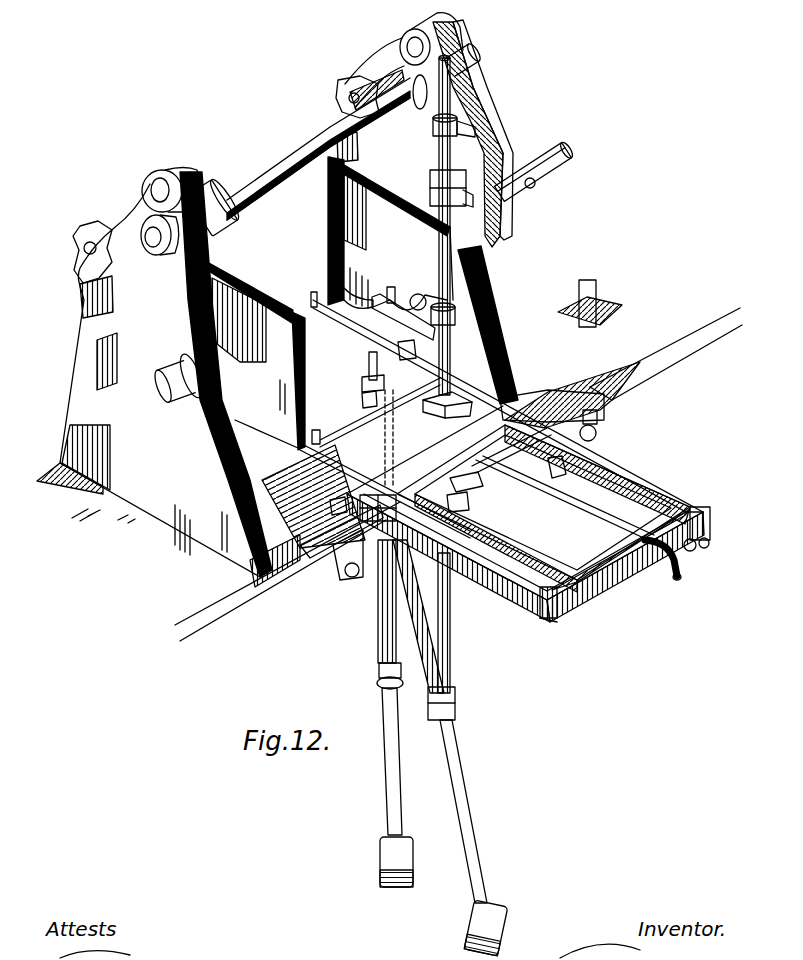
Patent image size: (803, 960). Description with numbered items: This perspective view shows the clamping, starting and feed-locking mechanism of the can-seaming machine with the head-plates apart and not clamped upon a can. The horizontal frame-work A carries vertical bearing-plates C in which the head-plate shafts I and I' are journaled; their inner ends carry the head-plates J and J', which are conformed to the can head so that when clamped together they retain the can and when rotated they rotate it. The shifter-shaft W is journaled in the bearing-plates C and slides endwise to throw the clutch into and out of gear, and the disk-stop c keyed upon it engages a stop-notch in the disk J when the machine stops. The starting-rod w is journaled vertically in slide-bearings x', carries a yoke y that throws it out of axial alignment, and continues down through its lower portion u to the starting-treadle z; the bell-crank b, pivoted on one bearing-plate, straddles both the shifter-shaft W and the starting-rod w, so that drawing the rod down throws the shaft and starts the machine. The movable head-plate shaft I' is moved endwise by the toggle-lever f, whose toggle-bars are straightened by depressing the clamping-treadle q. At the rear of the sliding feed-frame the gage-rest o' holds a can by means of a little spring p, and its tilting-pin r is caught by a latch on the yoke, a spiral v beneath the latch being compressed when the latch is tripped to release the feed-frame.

The horizontal frame-work A is at (389, 474).
The vertical bearing-plates C is at (332, 295).
The shifter-shaft W is at (327, 147).
The disk-stop c is at (216, 228).
The head-plate shaft I is at (178, 381).
The head-plate shaft I' is at (510, 121).
The bell-crank b is at (479, 181).
The starting-rod w is at (439, 164).
The movable head-plate J' is at (390, 233).
The head-plate J is at (252, 354).
The gage-rest o' is at (508, 406).
The starting-rod lower portion u is at (378, 637).
The starting-treadle z is at (398, 756).
The clamping-treadle q is at (466, 787).
The toggle-lever f is at (610, 418).
The yoke y is at (421, 299).
The tilting-pin r is at (403, 321).
The spiral spring v is at (412, 350).
The spring p is at (377, 437).
The slide-bearing x' is at (447, 412).